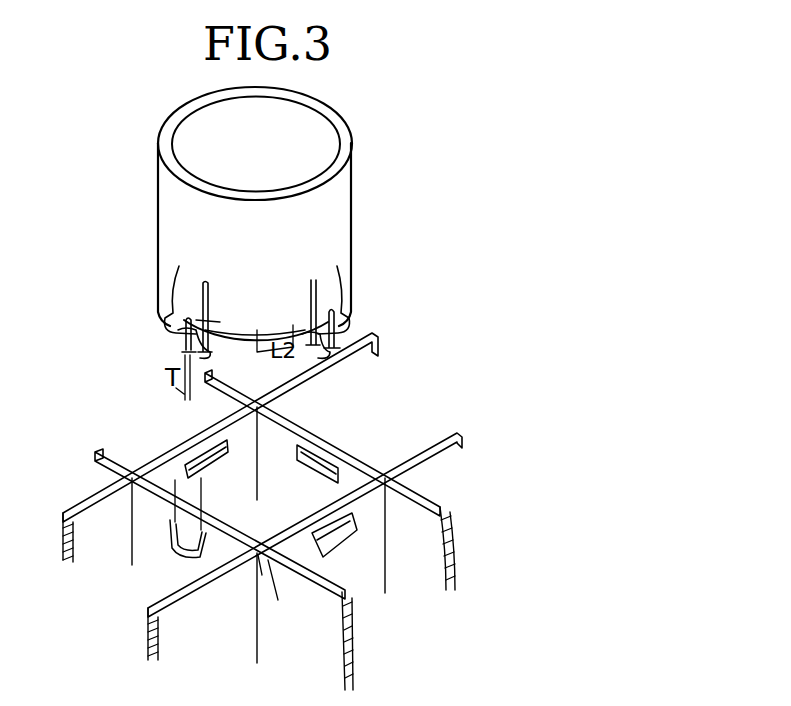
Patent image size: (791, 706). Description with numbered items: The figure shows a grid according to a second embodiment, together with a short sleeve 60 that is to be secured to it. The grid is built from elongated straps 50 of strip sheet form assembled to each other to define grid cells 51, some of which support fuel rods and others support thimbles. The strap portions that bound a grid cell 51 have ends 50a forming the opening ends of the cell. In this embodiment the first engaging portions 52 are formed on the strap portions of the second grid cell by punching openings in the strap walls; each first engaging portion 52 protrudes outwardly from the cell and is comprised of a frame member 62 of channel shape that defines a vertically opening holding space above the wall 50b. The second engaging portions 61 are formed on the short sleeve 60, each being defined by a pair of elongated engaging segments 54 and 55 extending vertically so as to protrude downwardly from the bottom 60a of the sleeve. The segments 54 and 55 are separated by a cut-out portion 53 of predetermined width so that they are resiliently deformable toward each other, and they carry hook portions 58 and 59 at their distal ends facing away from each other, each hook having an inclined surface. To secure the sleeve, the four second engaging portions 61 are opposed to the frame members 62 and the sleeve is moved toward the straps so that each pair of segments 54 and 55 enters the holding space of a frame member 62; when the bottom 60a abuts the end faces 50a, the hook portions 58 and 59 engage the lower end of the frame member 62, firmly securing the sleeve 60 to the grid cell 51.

The short sleeve 60 is at (358, 186).
The bottom of the short sleeve 60a is at (268, 326).
The second engaging portion 61 is at (160, 306).
The cut-out portion 53 is at (196, 286).
The engaging segment 54 is at (182, 353).
The engaging segment 55 is at (208, 327).
The hook portion 58 is at (168, 333).
The hook portion 59 is at (206, 354).
The strap 50 is at (282, 511).
The end of the strap portion 50a is at (183, 437).
The wall 50b is at (350, 577).
The grid cell 51 is at (290, 577).
The first engaging portion 52 is at (172, 560).
The frame member 62 is at (192, 565).